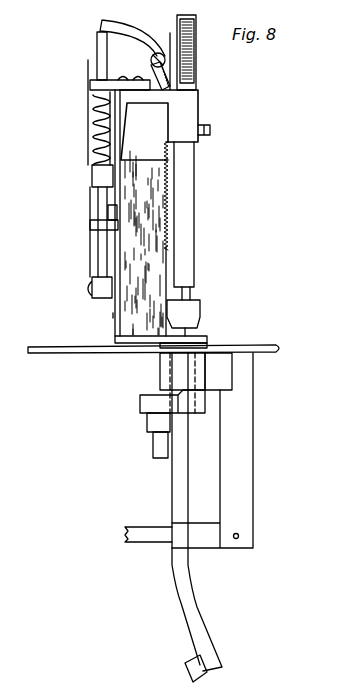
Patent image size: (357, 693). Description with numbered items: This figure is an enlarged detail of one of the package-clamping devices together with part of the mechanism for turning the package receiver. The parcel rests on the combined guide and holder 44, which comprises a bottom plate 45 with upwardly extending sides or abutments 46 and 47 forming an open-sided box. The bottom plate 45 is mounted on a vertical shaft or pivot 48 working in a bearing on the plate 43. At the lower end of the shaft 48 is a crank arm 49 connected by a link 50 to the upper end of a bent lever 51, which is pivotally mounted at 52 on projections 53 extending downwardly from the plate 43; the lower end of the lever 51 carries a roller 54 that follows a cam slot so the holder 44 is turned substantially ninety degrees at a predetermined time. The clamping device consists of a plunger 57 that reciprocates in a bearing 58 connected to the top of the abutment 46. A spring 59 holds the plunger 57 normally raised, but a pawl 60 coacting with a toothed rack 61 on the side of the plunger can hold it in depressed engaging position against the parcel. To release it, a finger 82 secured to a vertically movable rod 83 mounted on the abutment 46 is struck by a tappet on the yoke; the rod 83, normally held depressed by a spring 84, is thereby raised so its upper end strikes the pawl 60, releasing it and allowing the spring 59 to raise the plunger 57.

The plate 43 is at (273, 346).
The combined guide and holder 44 is at (110, 313).
The bottom plate 45 is at (202, 338).
The side or abutment 46 is at (119, 311).
The side or abutment 47 is at (142, 231).
The vertical shaft or pivot 48 is at (170, 370).
The crank arm 49 is at (140, 400).
The link 50 is at (153, 447).
The bent lever 51 is at (195, 600).
The pivot 52 is at (150, 537).
The projections 53 is at (245, 475).
The roller 54 is at (202, 667).
The plunger 57 is at (188, 193).
The bearing 58 is at (198, 108).
The spring 59 is at (197, 68).
The pawl 60 is at (102, 24).
The toothed rack 61 is at (170, 147).
The finger 82 is at (92, 176).
The vertically movable rod 83 is at (98, 212).
The spring 84 is at (95, 142).